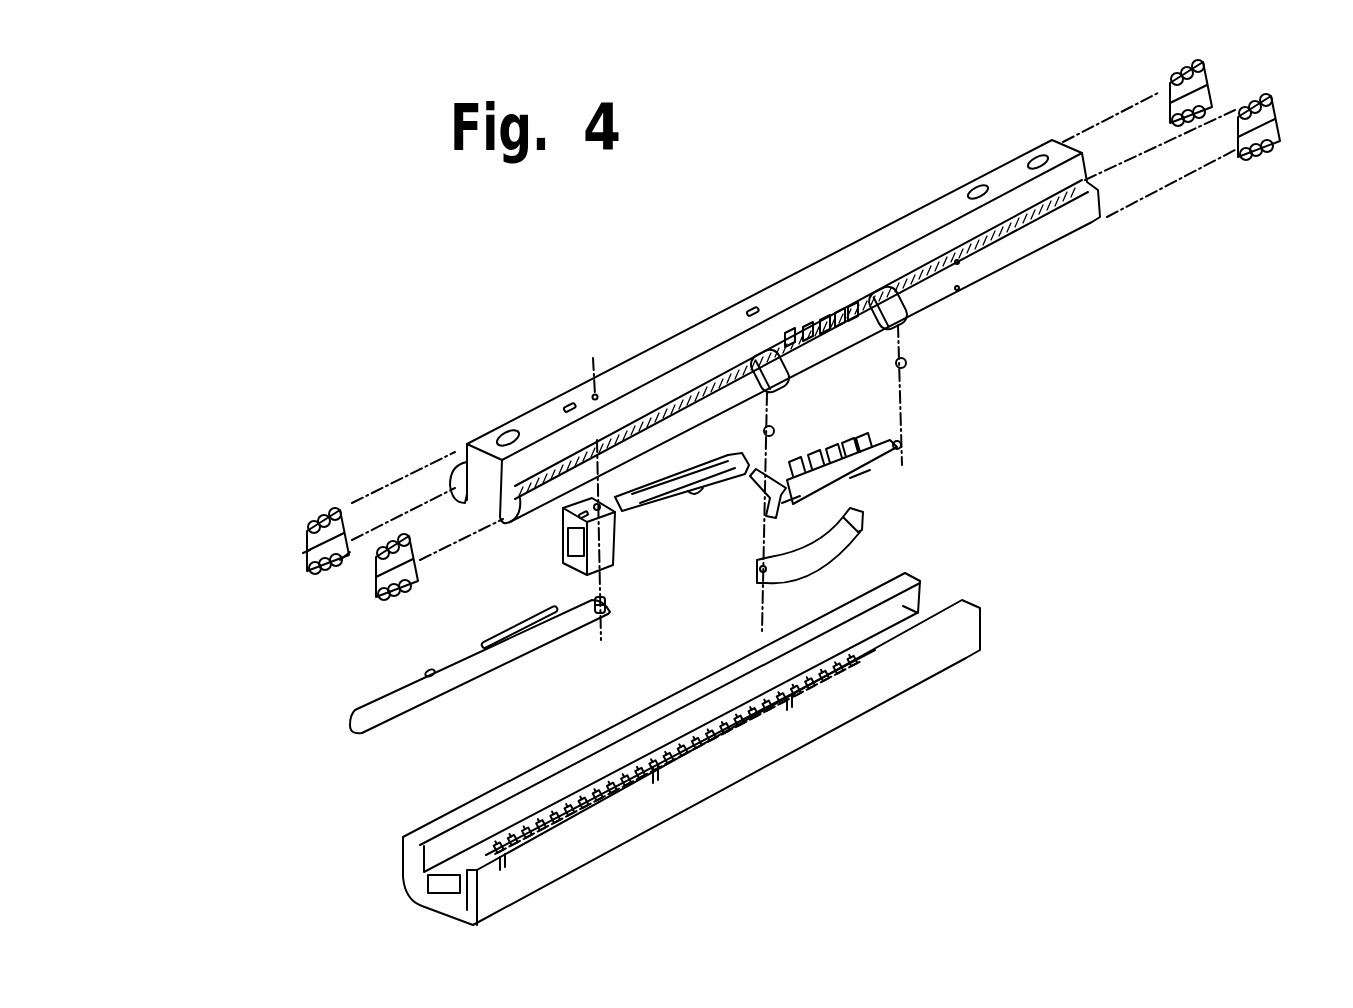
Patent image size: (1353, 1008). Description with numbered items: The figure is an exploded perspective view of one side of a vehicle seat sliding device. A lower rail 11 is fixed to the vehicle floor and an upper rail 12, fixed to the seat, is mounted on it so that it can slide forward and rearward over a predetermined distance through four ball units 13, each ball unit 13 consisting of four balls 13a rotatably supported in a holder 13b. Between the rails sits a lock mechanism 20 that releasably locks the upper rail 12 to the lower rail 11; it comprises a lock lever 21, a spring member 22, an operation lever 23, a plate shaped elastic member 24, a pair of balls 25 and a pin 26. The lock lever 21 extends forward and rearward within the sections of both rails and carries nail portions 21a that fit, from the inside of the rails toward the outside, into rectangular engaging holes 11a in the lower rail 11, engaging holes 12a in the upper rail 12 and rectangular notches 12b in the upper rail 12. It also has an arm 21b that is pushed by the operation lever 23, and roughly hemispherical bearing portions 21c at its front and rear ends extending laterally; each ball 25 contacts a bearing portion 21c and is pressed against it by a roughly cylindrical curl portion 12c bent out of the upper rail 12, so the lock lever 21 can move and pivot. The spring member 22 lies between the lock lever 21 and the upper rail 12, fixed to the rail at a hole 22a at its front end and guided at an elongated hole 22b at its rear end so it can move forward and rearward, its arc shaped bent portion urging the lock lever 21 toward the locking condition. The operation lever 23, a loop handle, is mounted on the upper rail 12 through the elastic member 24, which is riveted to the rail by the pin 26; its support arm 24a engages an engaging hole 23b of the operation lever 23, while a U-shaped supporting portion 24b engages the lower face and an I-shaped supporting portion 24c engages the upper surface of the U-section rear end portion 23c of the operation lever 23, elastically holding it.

The lower rail 11 is at (978, 634).
The engaging hole 11a is at (728, 742).
The upper rail 12 is at (678, 347).
The engaging hole 12a is at (837, 303).
The notch 12b is at (847, 300).
The curl portion 12c is at (757, 363).
The ball unit 13 is at (1168, 83).
The ball 13a is at (340, 560).
The holder 13b is at (303, 553).
The lock mechanism 20 is at (652, 630).
The lock lever 21 is at (895, 438).
The nail portion 21a is at (855, 478).
The arm 21b is at (782, 503).
The bearing portion 21c is at (773, 513).
The spring member 22 is at (842, 577).
The hole 22a is at (760, 568).
The elongated hole 22b is at (862, 530).
The operation lever 23 is at (407, 695).
The engaging hole 23b is at (433, 673).
The rear end portion 23c is at (557, 627).
The plate shaped elastic member 24 is at (605, 525).
The support arm 24a is at (562, 553).
The U-shaped supporting portion 24b is at (622, 503).
The I-shaped supporting portion 24c is at (712, 478).
The ball 25 is at (774, 430).
The pin 26 is at (605, 607).